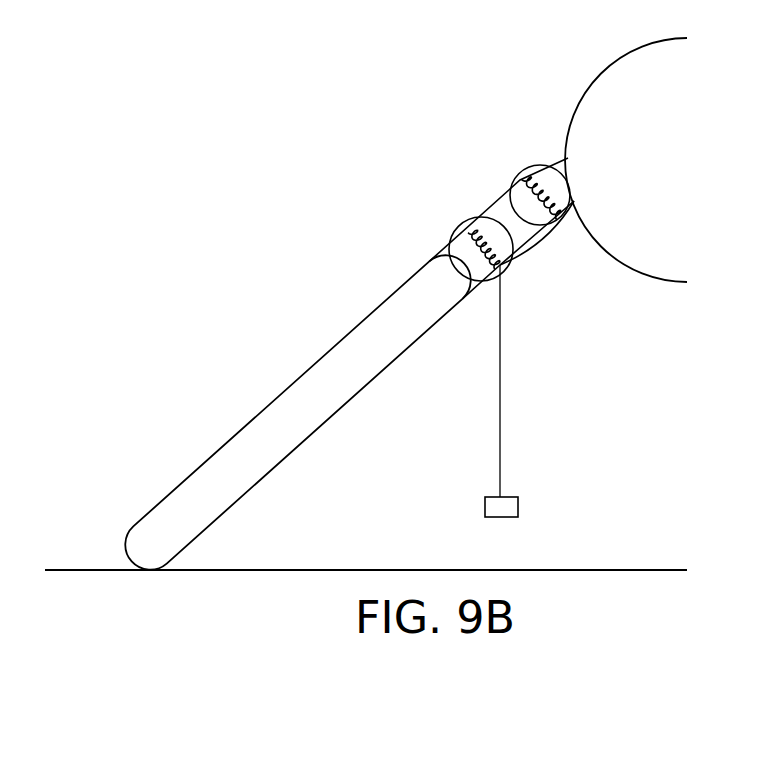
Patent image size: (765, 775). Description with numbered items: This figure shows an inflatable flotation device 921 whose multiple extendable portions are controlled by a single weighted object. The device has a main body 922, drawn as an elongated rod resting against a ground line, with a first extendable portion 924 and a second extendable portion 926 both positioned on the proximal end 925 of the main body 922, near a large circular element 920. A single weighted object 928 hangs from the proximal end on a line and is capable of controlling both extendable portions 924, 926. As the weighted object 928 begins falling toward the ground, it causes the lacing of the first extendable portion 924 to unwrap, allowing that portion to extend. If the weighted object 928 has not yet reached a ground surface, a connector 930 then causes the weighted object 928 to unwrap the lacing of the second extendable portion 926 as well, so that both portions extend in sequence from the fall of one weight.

The wheel 920 is at (663, 160).
The inflatable flotation device 921 is at (216, 316).
The main body 922 is at (287, 399).
The first extendable portion 924 is at (526, 180).
The proximal end 925 is at (433, 262).
The second extendable portion 926 is at (468, 232).
The weighted object 928 is at (487, 497).
The connector 930 is at (545, 237).